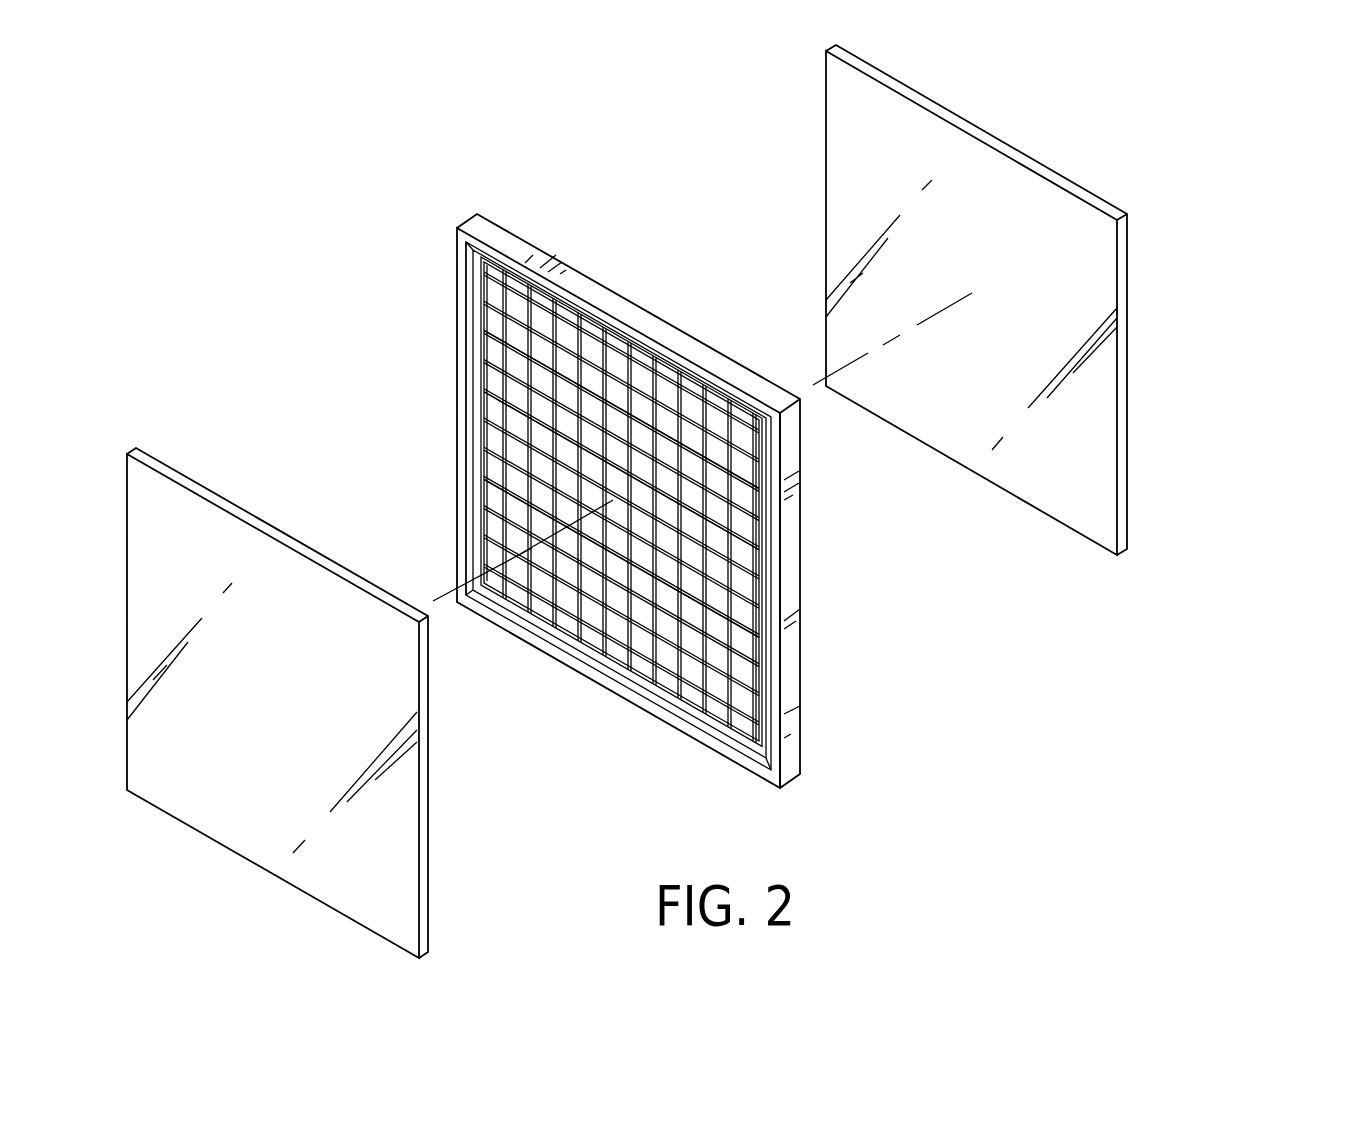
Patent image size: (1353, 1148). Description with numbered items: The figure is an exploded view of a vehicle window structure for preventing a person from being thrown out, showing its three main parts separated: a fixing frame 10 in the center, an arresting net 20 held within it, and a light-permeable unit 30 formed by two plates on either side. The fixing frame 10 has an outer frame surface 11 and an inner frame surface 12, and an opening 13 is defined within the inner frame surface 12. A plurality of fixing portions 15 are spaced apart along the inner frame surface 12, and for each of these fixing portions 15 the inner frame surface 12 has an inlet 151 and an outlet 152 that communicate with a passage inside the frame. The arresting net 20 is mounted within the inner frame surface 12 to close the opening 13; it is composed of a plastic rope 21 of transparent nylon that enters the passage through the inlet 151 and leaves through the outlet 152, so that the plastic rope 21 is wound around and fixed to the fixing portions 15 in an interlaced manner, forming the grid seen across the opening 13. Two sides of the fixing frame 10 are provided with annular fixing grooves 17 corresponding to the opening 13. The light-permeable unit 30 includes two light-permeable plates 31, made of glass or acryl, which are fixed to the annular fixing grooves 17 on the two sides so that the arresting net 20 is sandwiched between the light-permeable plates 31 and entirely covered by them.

The fixing frame 10 is at (822, 508).
The outer frame surface 11 is at (793, 745).
The inner frame surface 12 is at (487, 490).
The opening 13 is at (667, 657).
The fixing portions 15 is at (483, 373).
The inlet 151 is at (482, 350).
The outlet 152 is at (483, 387).
The annular fixing grooves 17 is at (470, 277).
The arresting net 20 is at (647, 501).
The plastic rope 21 is at (758, 647).
The light-permeable unit 30 is at (453, 768).
The light-permeable plates 31 is at (1127, 473).